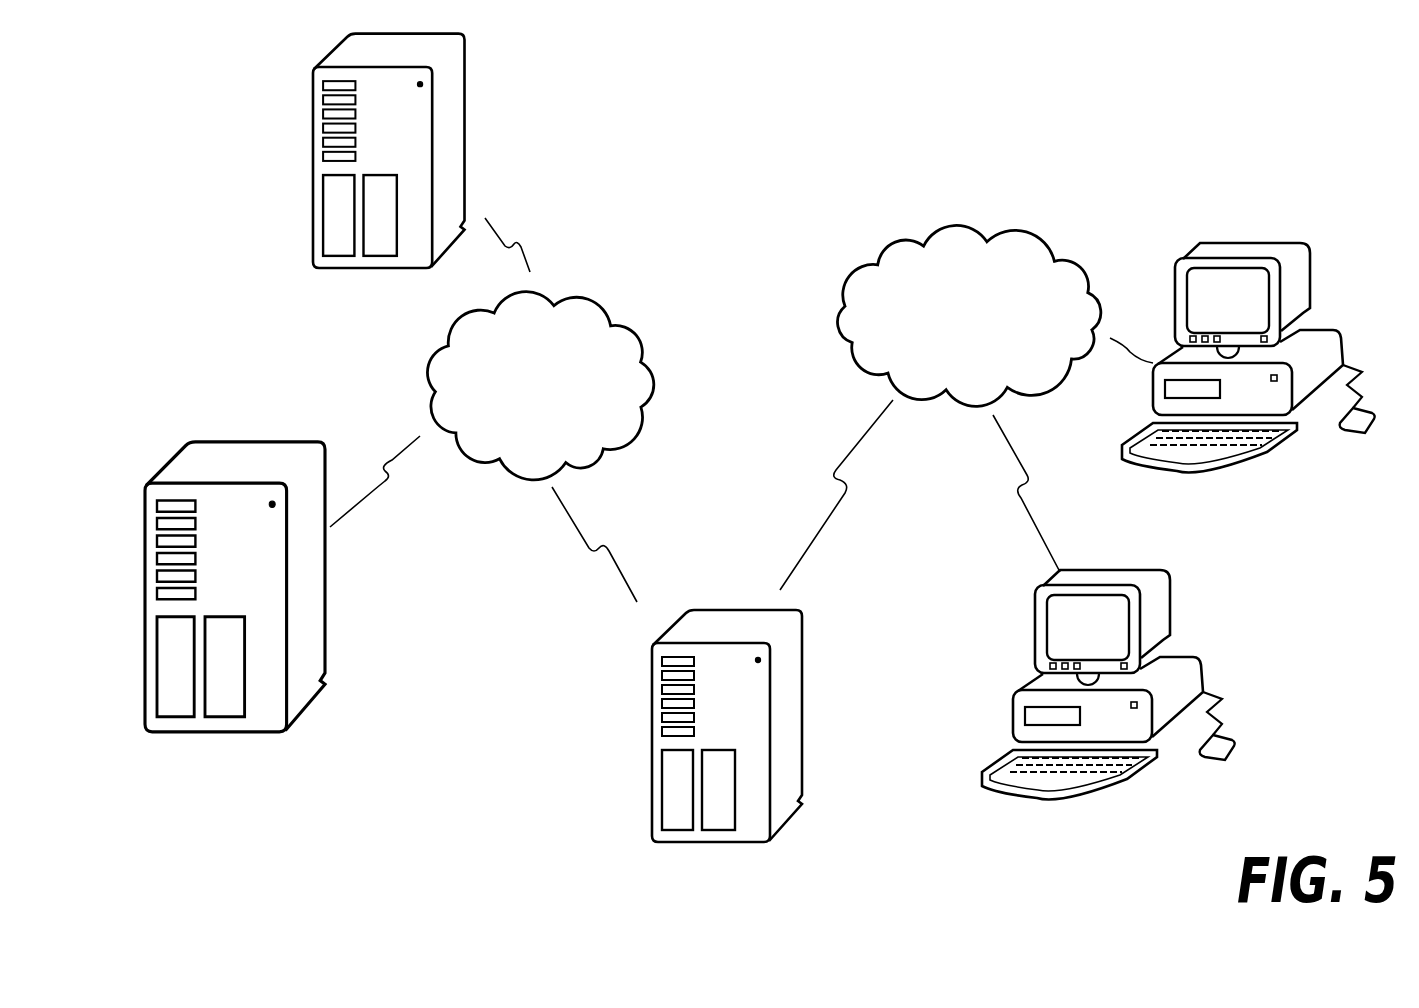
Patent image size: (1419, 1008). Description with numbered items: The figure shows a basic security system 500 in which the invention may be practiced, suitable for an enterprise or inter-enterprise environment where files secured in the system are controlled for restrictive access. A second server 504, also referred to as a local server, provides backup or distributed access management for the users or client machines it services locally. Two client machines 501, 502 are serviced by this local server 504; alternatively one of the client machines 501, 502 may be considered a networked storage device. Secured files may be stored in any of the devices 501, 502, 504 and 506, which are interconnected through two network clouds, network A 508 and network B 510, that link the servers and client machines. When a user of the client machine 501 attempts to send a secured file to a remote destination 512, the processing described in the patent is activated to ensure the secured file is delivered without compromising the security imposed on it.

The security system 500 is at (763, 438).
The client machine 501 is at (1190, 660).
The client machine 502 is at (1325, 330).
The second server 504 is at (705, 582).
The device 506 is at (240, 447).
The network A 508 is at (616, 298).
The network B 510 is at (1000, 238).
The remote destination 512 is at (464, 140).